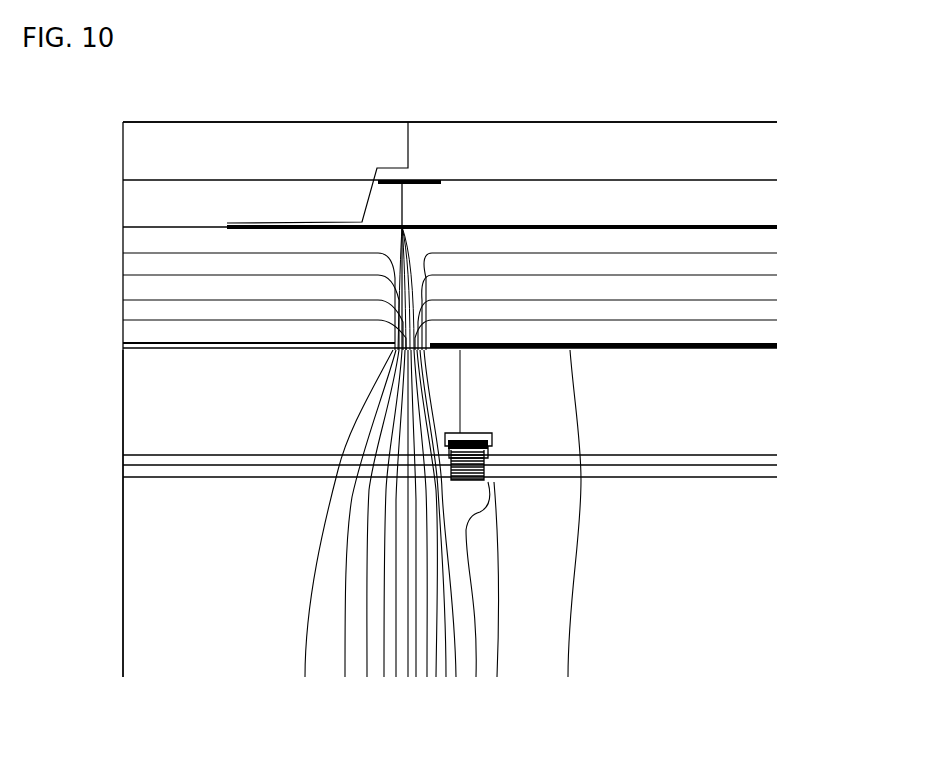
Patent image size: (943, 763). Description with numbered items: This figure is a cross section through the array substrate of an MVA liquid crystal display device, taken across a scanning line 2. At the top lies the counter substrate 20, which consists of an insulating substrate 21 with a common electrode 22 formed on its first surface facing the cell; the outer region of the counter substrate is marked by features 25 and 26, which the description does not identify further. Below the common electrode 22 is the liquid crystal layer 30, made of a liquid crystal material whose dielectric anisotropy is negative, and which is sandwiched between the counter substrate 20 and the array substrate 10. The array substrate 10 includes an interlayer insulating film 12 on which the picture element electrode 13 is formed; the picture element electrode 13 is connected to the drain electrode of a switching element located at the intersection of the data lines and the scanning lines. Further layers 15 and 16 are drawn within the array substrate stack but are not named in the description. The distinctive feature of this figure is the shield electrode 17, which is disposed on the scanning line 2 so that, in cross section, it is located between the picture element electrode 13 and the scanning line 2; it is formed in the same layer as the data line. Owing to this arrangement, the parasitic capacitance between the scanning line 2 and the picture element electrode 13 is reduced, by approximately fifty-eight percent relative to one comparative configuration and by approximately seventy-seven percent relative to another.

The scanning line 2 is at (460, 482).
The array substrate 10 is at (782, 352).
The interlayer insulating film 12 is at (132, 400).
The picture element electrode 13 is at (226, 344).
The lower electrode 15 is at (128, 475).
The upper electrode 16 is at (128, 457).
The shield electrode 17 is at (486, 434).
The counter substrate 20 is at (782, 125).
The insulating substrate 21 is at (678, 132).
The common electrode 22 is at (546, 232).
The insulating layer 25 is at (248, 210).
The conductive pattern 26 is at (430, 180).
The liquid crystal layer 30 is at (775, 296).